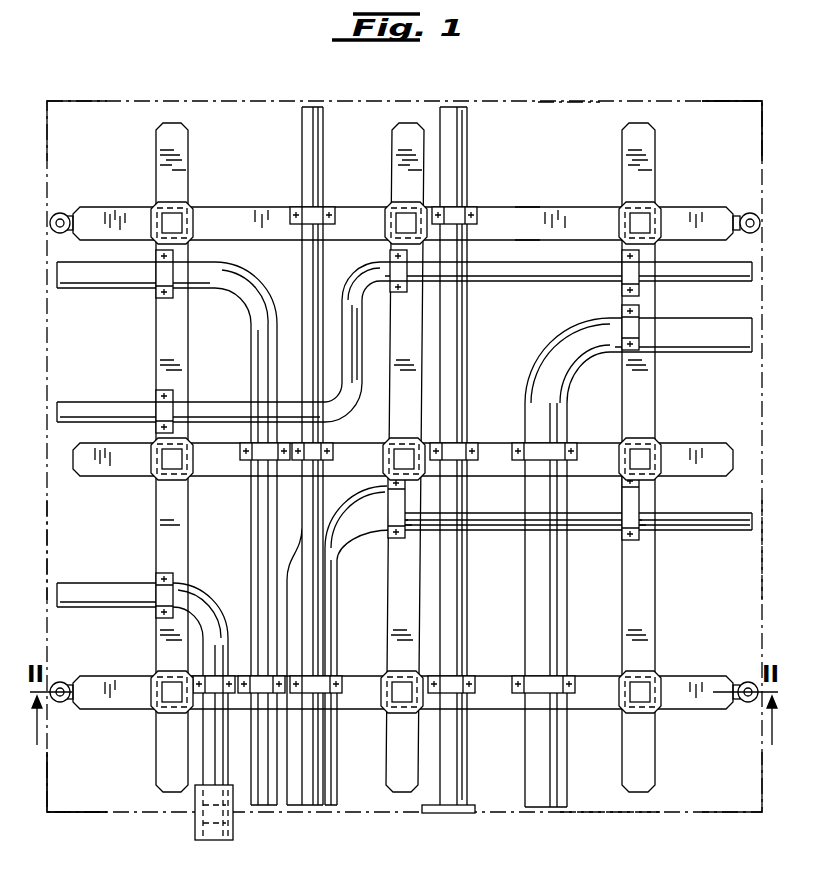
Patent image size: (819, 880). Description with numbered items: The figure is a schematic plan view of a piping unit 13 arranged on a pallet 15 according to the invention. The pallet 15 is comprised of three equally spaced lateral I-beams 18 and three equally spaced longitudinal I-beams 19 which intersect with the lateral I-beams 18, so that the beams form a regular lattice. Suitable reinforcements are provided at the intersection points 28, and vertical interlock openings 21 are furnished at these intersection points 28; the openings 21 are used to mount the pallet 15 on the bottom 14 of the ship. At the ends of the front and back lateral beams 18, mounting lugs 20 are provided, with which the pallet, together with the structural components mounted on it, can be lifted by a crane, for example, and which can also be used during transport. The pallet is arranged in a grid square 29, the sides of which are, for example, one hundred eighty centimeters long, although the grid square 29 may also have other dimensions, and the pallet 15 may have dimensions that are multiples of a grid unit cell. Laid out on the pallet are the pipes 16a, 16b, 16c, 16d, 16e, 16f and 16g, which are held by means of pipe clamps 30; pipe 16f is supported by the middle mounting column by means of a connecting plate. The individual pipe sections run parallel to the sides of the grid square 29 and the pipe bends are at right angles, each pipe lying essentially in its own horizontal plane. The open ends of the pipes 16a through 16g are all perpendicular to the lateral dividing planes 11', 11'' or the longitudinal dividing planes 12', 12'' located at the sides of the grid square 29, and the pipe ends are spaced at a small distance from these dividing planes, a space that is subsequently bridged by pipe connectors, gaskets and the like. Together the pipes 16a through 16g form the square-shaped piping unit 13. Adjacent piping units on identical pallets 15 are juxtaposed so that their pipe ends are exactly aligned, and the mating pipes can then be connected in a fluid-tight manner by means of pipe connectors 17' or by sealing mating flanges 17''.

The lateral dividing plane 11' is at (569, 122).
The lateral dividing plane 11'' is at (611, 830).
The longitudinal dividing plane 12' is at (80, 550).
The longitudinal dividing plane 12'' is at (728, 550).
The piping unit 13 is at (632, 95).
The bottom of the ship 14 is at (604, 608).
The pallet 15 is at (516, 205).
The pipe 16a is at (210, 590).
The pipe 16b is at (258, 360).
The pipe 16c is at (312, 125).
The pipe 16d is at (500, 268).
The pipe 16e is at (333, 545).
The pipe 16f is at (462, 340).
The pipe 16g is at (720, 345).
The pipe connector 17' is at (188, 814).
The sealing mating flange 17'' is at (456, 825).
The lateral I-beam 18 is at (270, 207).
The longitudinal I-beam 19 is at (158, 346).
The mounting lug 20 is at (62, 212).
The vertical interlock opening 21 is at (165, 217).
The intersection point 28 is at (195, 205).
The grid square 29 is at (752, 132).
The pipe clamp 30 is at (158, 272).